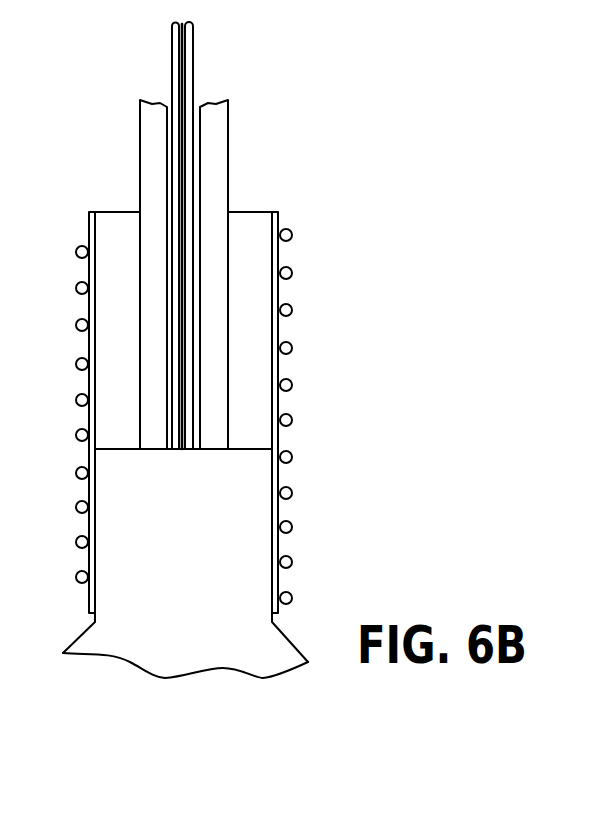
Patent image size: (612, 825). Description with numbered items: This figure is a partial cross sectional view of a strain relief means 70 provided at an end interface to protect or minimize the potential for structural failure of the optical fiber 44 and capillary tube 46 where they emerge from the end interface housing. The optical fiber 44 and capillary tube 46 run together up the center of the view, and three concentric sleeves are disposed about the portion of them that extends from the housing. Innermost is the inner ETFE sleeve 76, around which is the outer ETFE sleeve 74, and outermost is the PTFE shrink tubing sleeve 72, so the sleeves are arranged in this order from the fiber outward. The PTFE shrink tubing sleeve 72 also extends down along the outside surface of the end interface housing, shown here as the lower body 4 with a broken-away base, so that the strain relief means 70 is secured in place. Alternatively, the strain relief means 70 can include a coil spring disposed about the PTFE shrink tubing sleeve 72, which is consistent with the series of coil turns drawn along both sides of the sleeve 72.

The strain relief means 70 is at (410, 152).
The PTFE shrink tubing sleeve 72 is at (282, 335).
The outer ETFE sleeve 74 is at (248, 260).
The inner ETFE sleeve 76 is at (213, 139).
The optical fiber 44 is at (193, 52).
The capillary tube 46 is at (173, 57).
The base 4 is at (250, 518).